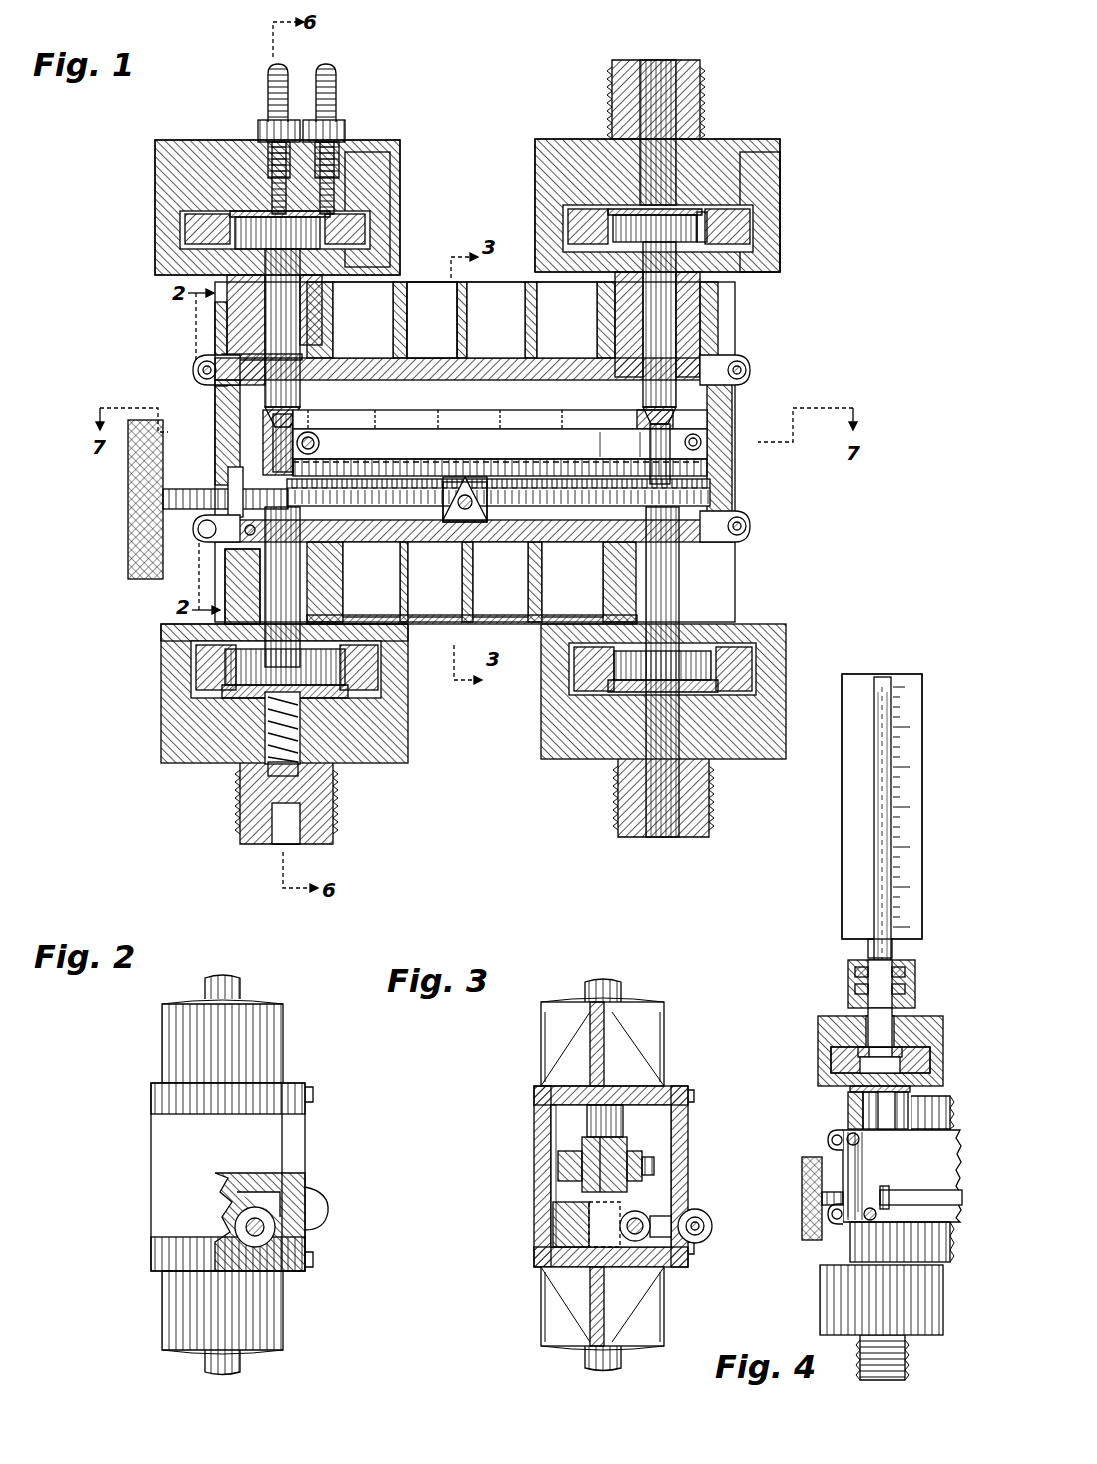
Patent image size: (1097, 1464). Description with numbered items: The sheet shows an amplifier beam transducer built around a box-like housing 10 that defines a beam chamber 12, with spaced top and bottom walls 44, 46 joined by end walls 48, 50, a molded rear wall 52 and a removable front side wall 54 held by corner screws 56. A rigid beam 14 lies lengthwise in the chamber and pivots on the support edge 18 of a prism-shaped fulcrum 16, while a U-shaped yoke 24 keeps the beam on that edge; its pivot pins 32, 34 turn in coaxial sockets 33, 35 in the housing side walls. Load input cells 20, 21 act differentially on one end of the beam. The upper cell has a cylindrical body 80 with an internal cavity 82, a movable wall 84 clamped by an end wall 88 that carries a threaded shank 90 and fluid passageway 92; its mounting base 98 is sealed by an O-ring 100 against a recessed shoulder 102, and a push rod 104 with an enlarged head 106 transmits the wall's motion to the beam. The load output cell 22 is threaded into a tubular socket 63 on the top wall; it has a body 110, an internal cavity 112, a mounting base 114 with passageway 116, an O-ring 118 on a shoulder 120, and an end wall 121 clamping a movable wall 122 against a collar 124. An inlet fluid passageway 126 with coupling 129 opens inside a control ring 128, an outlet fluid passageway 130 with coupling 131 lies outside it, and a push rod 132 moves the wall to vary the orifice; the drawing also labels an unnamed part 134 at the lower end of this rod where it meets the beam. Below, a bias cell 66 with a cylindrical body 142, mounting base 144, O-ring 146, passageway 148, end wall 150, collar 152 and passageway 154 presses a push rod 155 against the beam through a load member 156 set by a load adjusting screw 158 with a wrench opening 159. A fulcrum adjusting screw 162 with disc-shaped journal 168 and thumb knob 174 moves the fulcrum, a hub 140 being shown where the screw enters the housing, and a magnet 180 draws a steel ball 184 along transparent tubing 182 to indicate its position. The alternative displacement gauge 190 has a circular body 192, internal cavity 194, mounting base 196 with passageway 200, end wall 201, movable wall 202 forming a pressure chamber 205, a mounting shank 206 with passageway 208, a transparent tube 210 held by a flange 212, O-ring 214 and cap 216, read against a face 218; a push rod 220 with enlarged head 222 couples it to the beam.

In FIG. 1, the housing 10 is at (790, 398).
In FIG. 1, the beam chamber 12 is at (722, 388).
In FIG. 1, the rigid beam 14 is at (400, 416).
In FIG. 1, the fulcrum 16 is at (455, 520).
In FIG. 3, the fulcrum 16 is at (556, 1238).
In FIG. 1, the support edge 18 is at (470, 482).
In FIG. 3, the support edge 18 is at (560, 1200).
In FIG. 1, the load input cell 20 is at (800, 210).
In FIG. 1, the load input cell 21 is at (796, 642).
In FIG. 1, the load output cell 22 is at (128, 199).
In FIG. 1, the U-shaped yoke 24 is at (738, 480).
In FIG. 3, the pivot pin 32 is at (652, 1166).
In FIG. 3, the socket 33 is at (658, 1152).
In FIG. 3, the pivot pin 34 is at (566, 1176).
In FIG. 3, the socket 35 is at (560, 1156).
In FIG. 1, the top wall 44 is at (448, 356).
In FIG. 1, the bottom wall 46 is at (480, 512).
In FIG. 1, the end wall 48 is at (732, 448).
In FIG. 1, the end wall 50 is at (218, 420).
In FIG. 3, the rear wall 52 is at (540, 1117).
In FIG. 3, the removable front side wall 54 is at (680, 1120).
In FIG. 2, the screw 56 is at (312, 1088).
In FIG. 1, the tubular socket 63 is at (250, 317).
In FIG. 1, the bias cell 66 is at (150, 721).
In FIG. 4, the bias cell 66 is at (810, 1302).
In FIG. 1, the cylindrical body 80 is at (772, 242).
In FIG. 1, the internal cavity 82 is at (742, 252).
In FIG. 1, the movable wall 84 is at (762, 194).
In FIG. 1, the end wall 88 is at (762, 156).
In FIG. 1, the threaded shank 90 is at (690, 100).
In FIG. 1, the fluid passageway 92 is at (662, 130).
In FIG. 1, the mounting base 98 is at (716, 312).
In FIG. 1, the O-ring 100 is at (722, 332).
In FIG. 1, the recessed shoulder 102 is at (748, 356).
In FIG. 1, the push rod 104 is at (668, 290).
In FIG. 1, the enlarged head 106 is at (704, 242).
In FIG. 1, the cylindrical body 110 is at (158, 146).
In FIG. 1, the internal cavity 112 is at (268, 262).
In FIG. 1, the mounting base 114 is at (232, 347).
In FIG. 1, the passageway 116 is at (222, 332).
In FIG. 1, the O-ring 118 is at (208, 362).
In FIG. 1, the recessed shoulder 120 is at (205, 372).
In FIG. 1, the end wall 121 is at (362, 170).
In FIG. 1, the movable wall 122 is at (190, 220).
In FIG. 1, the collar 124 is at (252, 236).
In FIG. 1, the inlet fluid passageway 126 is at (268, 158).
In FIG. 1, the control ring 128 is at (270, 190).
In FIG. 1, the coupling 129 is at (272, 103).
In FIG. 1, the outlet fluid passageway 130 is at (340, 202).
In FIG. 1, the coupling 131 is at (332, 104).
In FIG. 1, the push rod 132 is at (252, 290).
In FIG. 1, the rod shoulder 134 is at (262, 284).
In FIG. 1, the shaft 140 is at (232, 490).
In FIG. 1, the cylindrical body 142 is at (240, 666).
In FIG. 1, the mounting base 144 is at (238, 580).
In FIG. 1, the O-ring 146 is at (170, 515).
In FIG. 1, the passageway 148 is at (252, 640).
In FIG. 1, the end wall 150 is at (248, 770).
In FIG. 1, the collar 152 is at (222, 690).
In FIG. 1, the passageway 154 is at (305, 742).
In FIG. 1, the push rod 155 is at (290, 650).
In FIG. 1, the load member 156 is at (300, 778).
In FIG. 1, the load adjusting screw 158 is at (328, 826).
In FIG. 1, the wrench opening 159 is at (284, 848).
In FIG. 2, the fulcrum adjusting screw 162 is at (270, 1222).
In FIG. 3, the fulcrum adjusting screw 162 is at (640, 1240).
In FIG. 2, the disc-shaped journal 168 is at (292, 1182).
In FIG. 4, the thumb knob 174 is at (804, 1170).
In FIG. 3, the magnet 180 is at (700, 1238).
In FIG. 3, the transparent plastic tubing 182 is at (695, 1212).
In FIG. 3, the steel ball 184 is at (712, 1225).
In FIG. 4, the displacement gauge 190 is at (832, 884).
In FIG. 4, the circular body 192 is at (852, 1082).
In FIG. 4, the internal cavity 194 is at (856, 1094).
In FIG. 4, the mounting base 196 is at (864, 1108).
In FIG. 4, the passageway 200 is at (831, 1138).
In FIG. 4, the end wall 201 is at (832, 1020).
In FIG. 4, the movable wall 202 is at (842, 1062).
In FIG. 4, the pressure chamber 205 is at (902, 1030).
In FIG. 4, the mounting shank 206 is at (856, 986).
In FIG. 4, the passageway 208 is at (862, 1050).
In FIG. 4, the transparent tube 210 is at (878, 920).
In FIG. 4, the flange 212 is at (866, 956).
In FIG. 4, the O-ring 214 is at (856, 974).
In FIG. 4, the cap 216 is at (900, 962).
In FIG. 4, the face 218 is at (846, 815).
In FIG. 4, the push rod 220 is at (890, 1128).
In FIG. 4, the enlarged head 222 is at (908, 1042).